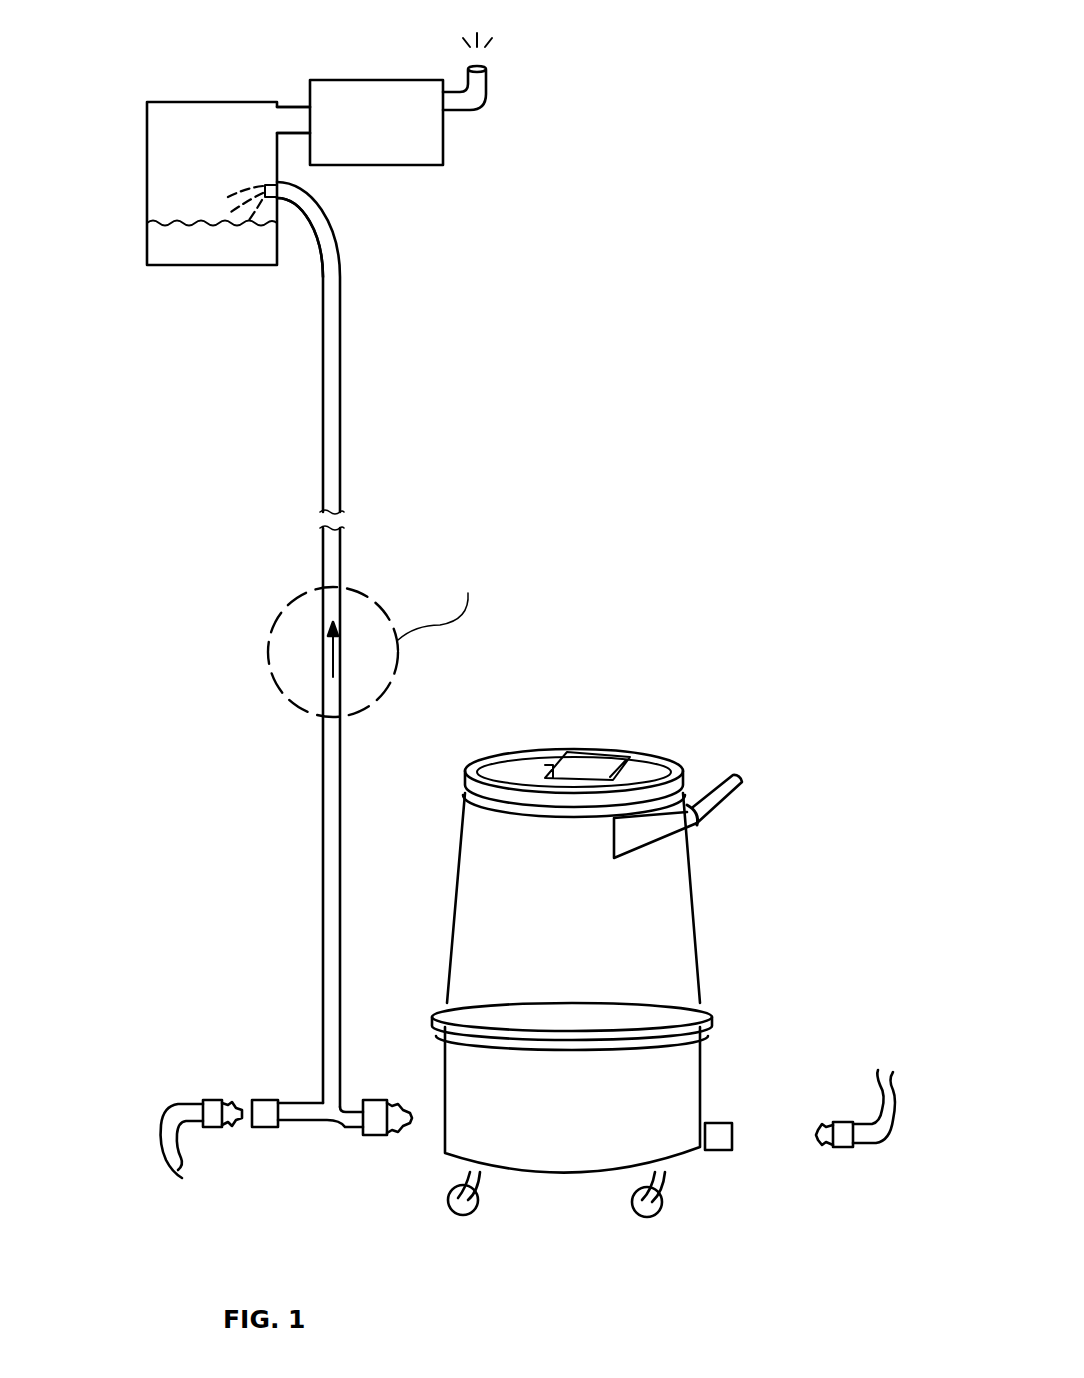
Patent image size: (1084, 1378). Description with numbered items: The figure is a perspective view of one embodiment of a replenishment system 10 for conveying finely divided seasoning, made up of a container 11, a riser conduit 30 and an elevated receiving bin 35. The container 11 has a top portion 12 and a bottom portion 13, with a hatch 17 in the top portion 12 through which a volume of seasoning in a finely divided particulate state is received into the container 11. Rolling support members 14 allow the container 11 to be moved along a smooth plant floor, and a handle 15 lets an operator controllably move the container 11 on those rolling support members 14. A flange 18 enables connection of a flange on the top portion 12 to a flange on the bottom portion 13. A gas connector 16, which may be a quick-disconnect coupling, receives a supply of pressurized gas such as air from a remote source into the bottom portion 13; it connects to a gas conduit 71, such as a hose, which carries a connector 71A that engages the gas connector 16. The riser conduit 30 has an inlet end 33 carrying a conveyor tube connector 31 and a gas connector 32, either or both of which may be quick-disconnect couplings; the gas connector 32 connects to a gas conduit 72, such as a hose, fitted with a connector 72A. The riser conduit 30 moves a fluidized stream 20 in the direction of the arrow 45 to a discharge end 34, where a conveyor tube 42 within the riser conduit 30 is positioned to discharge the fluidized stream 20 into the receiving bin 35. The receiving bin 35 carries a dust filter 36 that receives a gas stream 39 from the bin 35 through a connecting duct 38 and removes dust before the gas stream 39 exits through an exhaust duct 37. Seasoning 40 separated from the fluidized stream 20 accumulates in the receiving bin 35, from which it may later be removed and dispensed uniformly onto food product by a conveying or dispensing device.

The replenishment system 10 is at (648, 477).
The container 11 is at (628, 988).
The top portion 12 is at (692, 875).
The bottom portion 13 is at (700, 1083).
The rolling support members 14 is at (482, 1203).
The handle 15 is at (722, 795).
The gas connector 16 is at (718, 1152).
The hatch 17 is at (590, 762).
The flange 18 is at (712, 1008).
The fluidized stream 20 is at (227, 192).
The riser conduit 30 is at (340, 437).
The conveyor tube connector 31 is at (372, 1137).
The gas connector 32 is at (275, 1102).
The inlet end 33 is at (356, 1079).
The discharge end 34 is at (293, 208).
The receiving bin 35 is at (157, 265).
The dust filter 36 is at (443, 155).
The exhaust duct 37 is at (488, 85).
The connecting duct 38 is at (302, 107).
The gas stream 39 is at (487, 43).
The seasoning 40 is at (227, 252).
The conveyor tube 42 is at (275, 183).
The arrow 45 is at (333, 657).
The gas conduit 71 is at (888, 1132).
The connector 71A is at (817, 1143).
The gas conduit 72 is at (177, 1105).
The connector 72A is at (213, 1100).